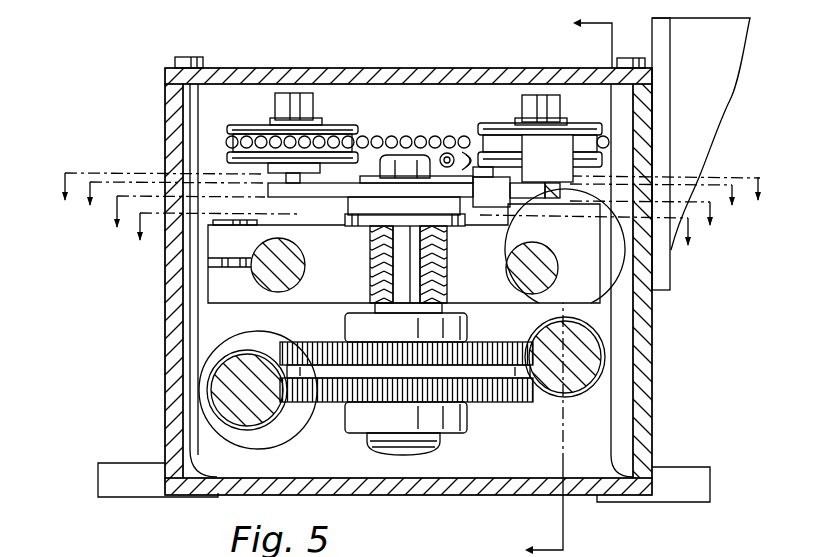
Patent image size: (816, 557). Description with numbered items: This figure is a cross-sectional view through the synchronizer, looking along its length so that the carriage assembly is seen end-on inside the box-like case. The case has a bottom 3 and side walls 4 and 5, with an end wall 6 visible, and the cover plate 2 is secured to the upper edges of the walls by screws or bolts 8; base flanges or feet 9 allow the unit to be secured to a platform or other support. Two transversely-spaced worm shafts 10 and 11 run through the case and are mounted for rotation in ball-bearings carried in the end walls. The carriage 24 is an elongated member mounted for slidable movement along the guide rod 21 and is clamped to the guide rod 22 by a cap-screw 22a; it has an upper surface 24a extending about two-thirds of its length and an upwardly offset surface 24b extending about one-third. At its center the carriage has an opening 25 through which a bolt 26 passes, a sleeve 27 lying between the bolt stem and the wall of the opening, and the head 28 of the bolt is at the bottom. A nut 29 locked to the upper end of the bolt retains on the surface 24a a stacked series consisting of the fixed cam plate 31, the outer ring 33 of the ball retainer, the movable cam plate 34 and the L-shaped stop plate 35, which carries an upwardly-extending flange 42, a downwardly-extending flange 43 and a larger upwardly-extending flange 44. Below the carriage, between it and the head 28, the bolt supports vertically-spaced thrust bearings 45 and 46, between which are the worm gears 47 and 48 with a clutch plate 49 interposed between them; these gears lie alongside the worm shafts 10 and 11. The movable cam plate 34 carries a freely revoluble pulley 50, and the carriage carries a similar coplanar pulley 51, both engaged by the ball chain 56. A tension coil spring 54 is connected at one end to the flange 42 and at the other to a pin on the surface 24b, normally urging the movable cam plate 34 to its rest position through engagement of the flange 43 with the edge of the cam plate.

The cover plate 2 is at (373, 68).
The bottom 3 is at (370, 495).
The side wall 4 is at (652, 367).
The side wall 5 is at (163, 385).
The end wall 6 is at (555, 285).
The screws or bolts 8 is at (190, 57).
The base flanges or feet 9 is at (690, 467).
The worm shaft 10 is at (578, 433).
The worm shaft 11 is at (277, 448).
The guide rod 21 is at (512, 268).
The guide rod 22 is at (298, 270).
The cap-screw 22a is at (213, 220).
The carriage 24 is at (585, 300).
The upper surface 24a is at (265, 225).
The upwardly offset surface 24b is at (585, 202).
The opening 25 is at (373, 282).
The bolt 26 is at (402, 253).
The sleeve 27 is at (372, 255).
The head 28 is at (420, 448).
The nut 29 is at (405, 168).
The fixed cam plate 31 is at (368, 226).
The outer ring 33 is at (350, 205).
The movable cam plate 34 is at (275, 193).
The stop plate 35 is at (392, 172).
The upwardly-extending flange 42 is at (437, 157).
The downwardly-extending flange 43 is at (502, 192).
The upwardly-extending flange 44 is at (558, 147).
The thrust bearing 45 is at (467, 332).
The thrust bearing 46 is at (467, 423).
The worm gear 47 is at (297, 342).
The worm gear 48 is at (326, 403).
The clutch plate 49 is at (315, 372).
The pulley 50 is at (243, 125).
The pulley 51 is at (495, 123).
The tension coil spring 54 is at (441, 158).
The ball chain 56 is at (369, 175).